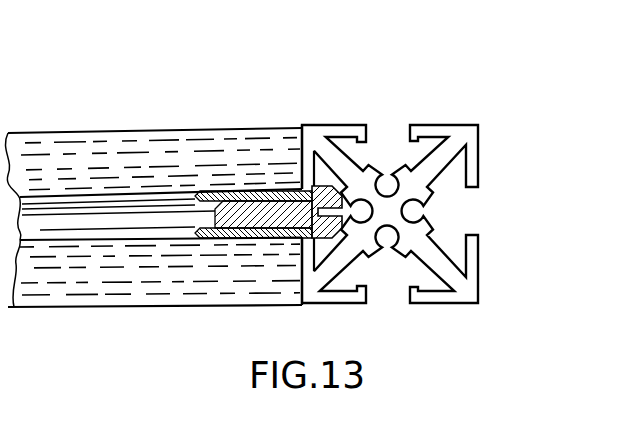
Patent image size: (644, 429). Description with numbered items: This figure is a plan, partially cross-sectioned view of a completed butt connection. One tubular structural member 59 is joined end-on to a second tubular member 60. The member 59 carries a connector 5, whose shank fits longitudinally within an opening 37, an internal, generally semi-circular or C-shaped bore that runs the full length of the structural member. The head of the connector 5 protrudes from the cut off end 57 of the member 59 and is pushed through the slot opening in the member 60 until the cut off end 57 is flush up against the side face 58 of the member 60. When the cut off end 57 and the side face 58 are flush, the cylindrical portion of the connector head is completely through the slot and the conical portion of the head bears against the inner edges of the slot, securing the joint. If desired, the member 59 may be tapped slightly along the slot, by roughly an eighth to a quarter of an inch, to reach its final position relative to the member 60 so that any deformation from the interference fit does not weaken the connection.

The member 59 is at (155, 129).
The cut off end 57 is at (305, 144).
The member 60 is at (428, 123).
The opening 37 is at (210, 232).
The connector 5 is at (250, 236).
The side face 58 is at (300, 268).